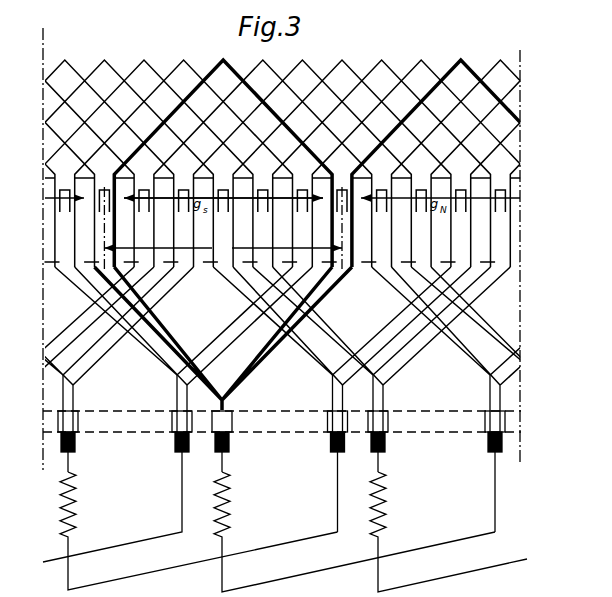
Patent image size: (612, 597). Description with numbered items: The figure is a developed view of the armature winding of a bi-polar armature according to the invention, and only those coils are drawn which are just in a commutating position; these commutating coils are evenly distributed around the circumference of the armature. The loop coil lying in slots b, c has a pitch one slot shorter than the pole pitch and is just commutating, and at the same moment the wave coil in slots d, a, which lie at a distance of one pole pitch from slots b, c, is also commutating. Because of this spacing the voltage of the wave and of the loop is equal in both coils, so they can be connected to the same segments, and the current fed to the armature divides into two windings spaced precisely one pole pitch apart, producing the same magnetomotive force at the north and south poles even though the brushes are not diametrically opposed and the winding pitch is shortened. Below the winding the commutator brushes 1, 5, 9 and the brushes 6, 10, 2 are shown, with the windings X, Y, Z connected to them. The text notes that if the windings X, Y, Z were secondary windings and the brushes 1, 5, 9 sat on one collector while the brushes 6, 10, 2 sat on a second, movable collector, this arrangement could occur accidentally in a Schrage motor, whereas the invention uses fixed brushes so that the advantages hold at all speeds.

The brush 10 is at (61, 451).
The brush 1 is at (175, 451).
The brush 2 is at (216, 451).
The brush 5 is at (330, 451).
The brush 6 is at (371, 451).
The brush 9 is at (492, 451).
The winding Z is at (199, 531).
The winding Y is at (354, 532).
The winding X is at (448, 532).
The slot a is at (96, 248).
The slot b is at (110, 249).
The slot c is at (333, 248).
The slot d is at (348, 249).